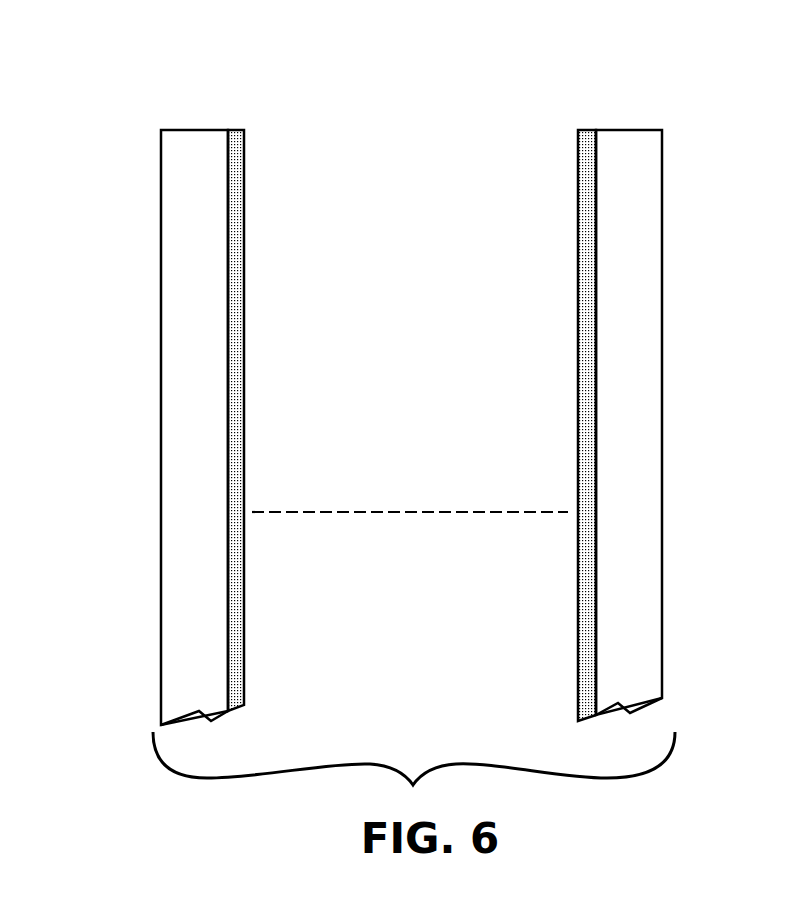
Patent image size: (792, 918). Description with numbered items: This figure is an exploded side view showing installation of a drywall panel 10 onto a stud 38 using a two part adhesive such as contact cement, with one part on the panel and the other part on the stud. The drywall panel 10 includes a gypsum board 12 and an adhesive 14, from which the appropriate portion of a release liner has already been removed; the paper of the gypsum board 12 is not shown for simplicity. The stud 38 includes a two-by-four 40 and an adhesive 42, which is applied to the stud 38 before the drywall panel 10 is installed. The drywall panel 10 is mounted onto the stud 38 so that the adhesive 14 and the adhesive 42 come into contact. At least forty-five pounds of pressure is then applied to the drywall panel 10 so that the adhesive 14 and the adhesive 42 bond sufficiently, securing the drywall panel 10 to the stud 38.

The drywall panel 10 is at (648, 381).
The gypsum board 12 is at (624, 157).
The adhesive 14 is at (590, 137).
The stud 38 is at (175, 382).
The two-by-four 40 is at (197, 157).
The adhesive 42 is at (236, 137).